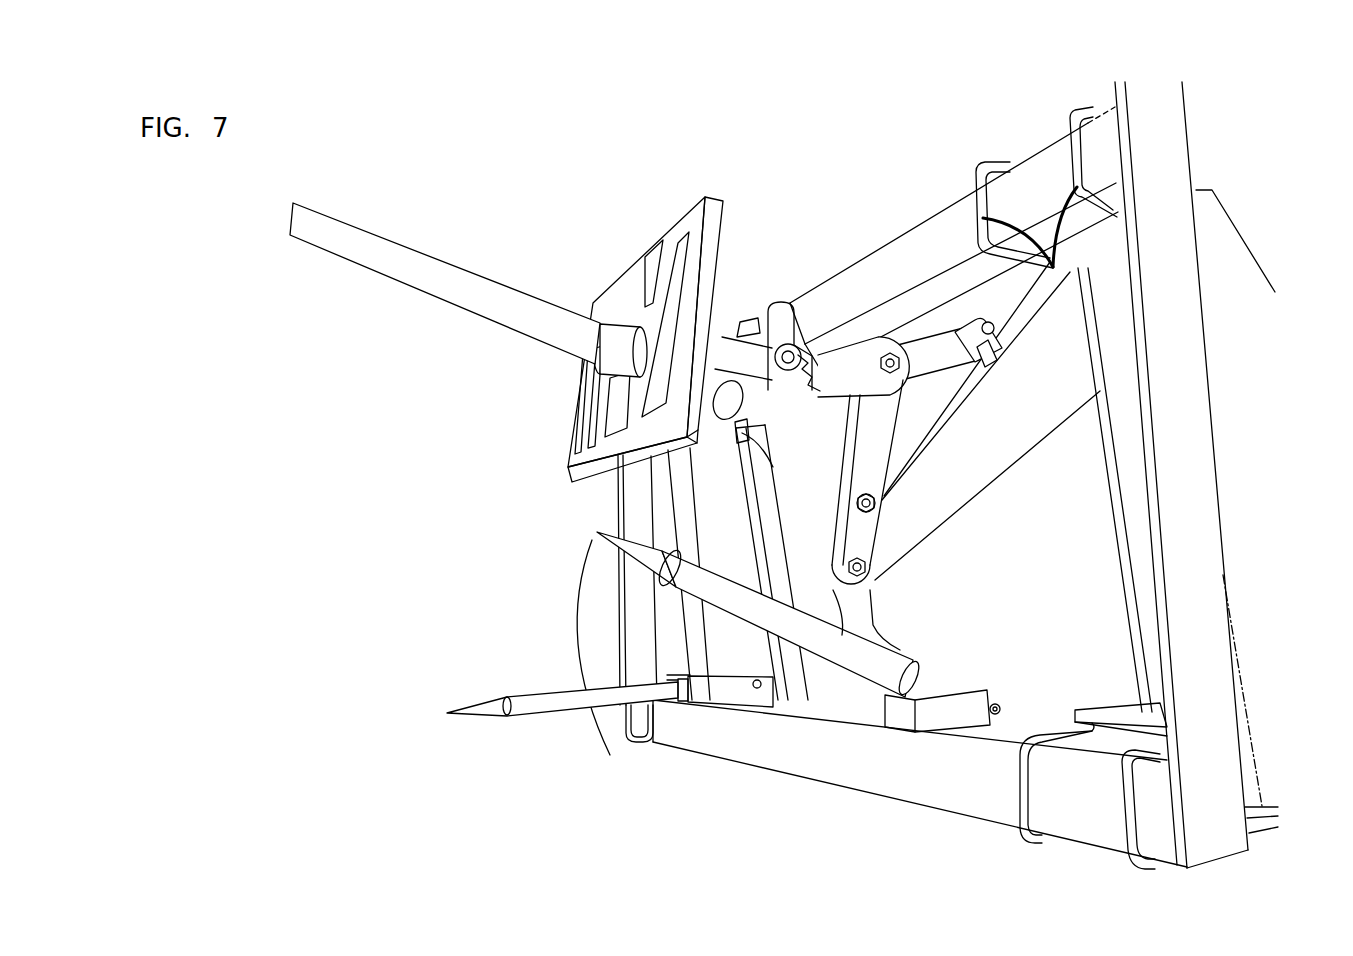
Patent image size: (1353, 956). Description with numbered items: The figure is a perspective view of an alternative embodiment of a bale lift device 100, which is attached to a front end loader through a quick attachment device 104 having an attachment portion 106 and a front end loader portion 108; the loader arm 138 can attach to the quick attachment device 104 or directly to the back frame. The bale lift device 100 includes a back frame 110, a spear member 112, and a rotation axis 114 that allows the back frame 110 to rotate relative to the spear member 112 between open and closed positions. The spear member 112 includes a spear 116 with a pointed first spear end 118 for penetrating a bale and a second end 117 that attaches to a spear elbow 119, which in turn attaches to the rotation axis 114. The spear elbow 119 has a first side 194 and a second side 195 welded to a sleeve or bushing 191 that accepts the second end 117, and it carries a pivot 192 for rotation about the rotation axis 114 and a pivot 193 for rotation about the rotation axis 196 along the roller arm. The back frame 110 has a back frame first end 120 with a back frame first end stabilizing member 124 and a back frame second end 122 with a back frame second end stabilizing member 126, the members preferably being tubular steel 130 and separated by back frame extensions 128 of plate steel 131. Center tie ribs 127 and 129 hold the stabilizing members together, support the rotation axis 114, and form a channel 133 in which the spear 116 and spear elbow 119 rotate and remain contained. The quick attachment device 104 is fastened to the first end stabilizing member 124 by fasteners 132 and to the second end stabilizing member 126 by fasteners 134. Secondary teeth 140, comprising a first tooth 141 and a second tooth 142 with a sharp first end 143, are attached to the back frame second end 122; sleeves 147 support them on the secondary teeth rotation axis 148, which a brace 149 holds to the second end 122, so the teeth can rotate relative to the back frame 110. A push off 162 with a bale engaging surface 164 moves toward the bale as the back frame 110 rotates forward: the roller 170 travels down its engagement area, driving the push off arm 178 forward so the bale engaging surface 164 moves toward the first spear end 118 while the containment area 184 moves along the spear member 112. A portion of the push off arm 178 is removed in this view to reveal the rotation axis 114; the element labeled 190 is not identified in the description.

The bale lift device 100 is at (826, 183).
The quick attachment device 104 is at (1212, 223).
The attachment portion 106 is at (1130, 493).
The front end loader portion 108 is at (1247, 280).
The back frame 110 is at (949, 168).
The spear member 112 is at (481, 226).
The rotation axis 114 is at (793, 352).
The spear 116 is at (492, 300).
The second end 117 is at (598, 338).
The first spear end 118 is at (330, 236).
The spear elbow 119 is at (752, 420).
The back frame first end 120 is at (884, 260).
The back frame second end 122 is at (955, 800).
The back frame first end stabilizing member 124 is at (1047, 172).
The back frame second end stabilizing member 126 is at (872, 777).
The center tie rib 127 is at (762, 543).
The back frame extensions 128 is at (632, 600).
The center tie rib 129 is at (848, 744).
The tubular steel 130 is at (940, 232).
The plate steel 131 is at (1210, 503).
The fasteners 132 is at (1052, 262).
The channel 133 is at (712, 489).
The fasteners 134 is at (1060, 840).
The loader arm 138 is at (995, 465).
The secondary teeth 140 is at (497, 580).
The first tooth 141 is at (550, 705).
The second tooth 142 is at (876, 652).
The first end 143 is at (492, 718).
The sleeves 147 is at (940, 680).
The secondary teeth rotation axis 148 is at (1000, 710).
The brace 149 is at (960, 702).
The push off 162 is at (712, 223).
The bale engaging surface 164 is at (690, 225).
The roller 170 is at (868, 567).
The push off arm 178 is at (822, 390).
The containment area 184 is at (578, 374).
The cylinder 190 is at (868, 346).
The sleeve or bushing 191 is at (758, 462).
The pivot 192 is at (784, 352).
The pivot 193 is at (877, 500).
The first side 194 is at (732, 437).
The second side 195 is at (748, 413).
The rotation axis 196 is at (872, 507).